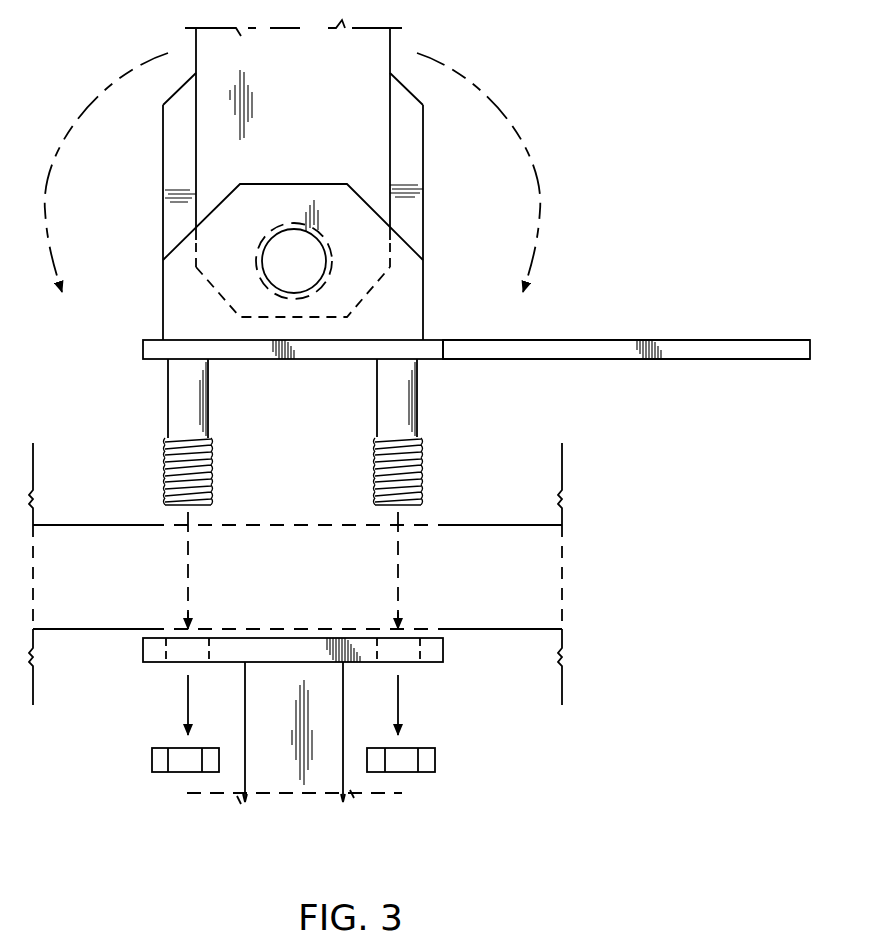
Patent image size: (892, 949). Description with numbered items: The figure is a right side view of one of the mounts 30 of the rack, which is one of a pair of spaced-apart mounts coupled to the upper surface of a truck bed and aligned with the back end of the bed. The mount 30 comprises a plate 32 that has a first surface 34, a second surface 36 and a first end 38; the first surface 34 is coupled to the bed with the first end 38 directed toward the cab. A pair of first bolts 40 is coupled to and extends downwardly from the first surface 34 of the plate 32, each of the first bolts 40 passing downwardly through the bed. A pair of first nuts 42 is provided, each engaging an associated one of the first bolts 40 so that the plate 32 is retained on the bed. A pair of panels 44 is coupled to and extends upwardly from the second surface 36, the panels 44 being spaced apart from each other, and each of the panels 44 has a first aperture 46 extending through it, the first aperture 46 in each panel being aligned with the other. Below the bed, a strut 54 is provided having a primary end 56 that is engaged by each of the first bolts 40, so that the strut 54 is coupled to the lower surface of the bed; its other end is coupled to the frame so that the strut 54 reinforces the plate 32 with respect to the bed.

The mount 30 is at (452, 298).
The plate 32 is at (665, 340).
The first surface 34 is at (745, 359).
The second surface 36 is at (747, 340).
The first end 38 is at (143, 352).
The first bolt 40 is at (377, 402).
The first nut 42 is at (168, 772).
The panel 44 is at (217, 203).
The first aperture 46 is at (284, 262).
The strut 54 is at (245, 700).
The primary end 56 is at (443, 648).